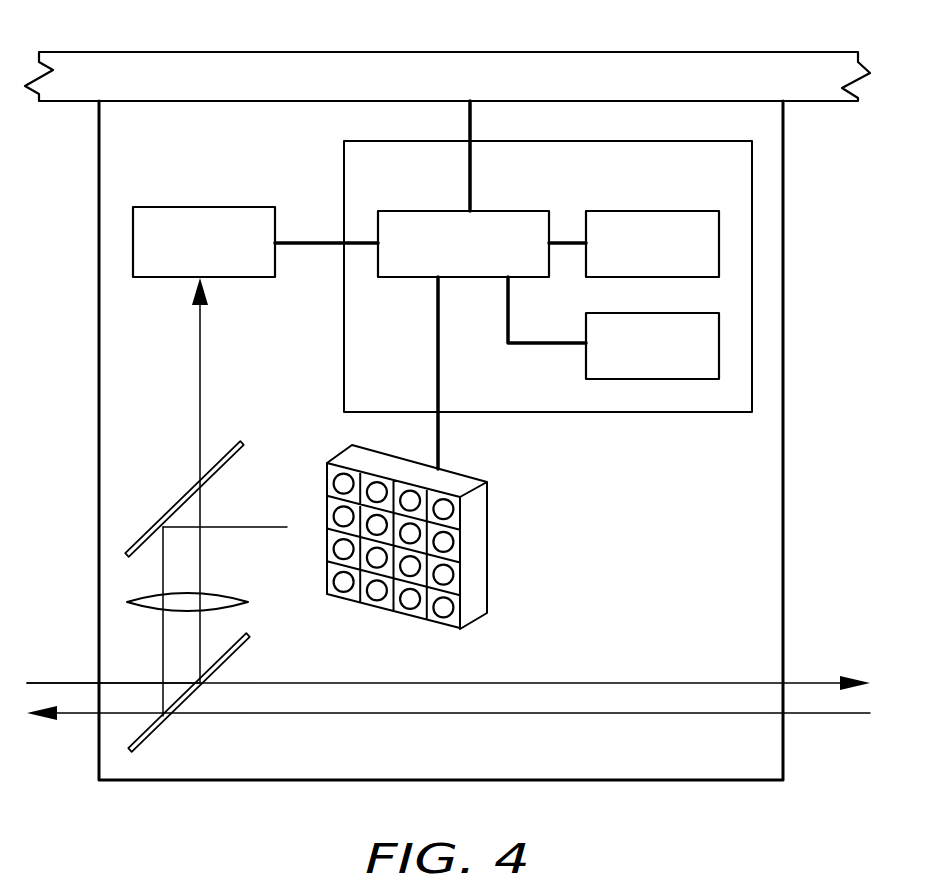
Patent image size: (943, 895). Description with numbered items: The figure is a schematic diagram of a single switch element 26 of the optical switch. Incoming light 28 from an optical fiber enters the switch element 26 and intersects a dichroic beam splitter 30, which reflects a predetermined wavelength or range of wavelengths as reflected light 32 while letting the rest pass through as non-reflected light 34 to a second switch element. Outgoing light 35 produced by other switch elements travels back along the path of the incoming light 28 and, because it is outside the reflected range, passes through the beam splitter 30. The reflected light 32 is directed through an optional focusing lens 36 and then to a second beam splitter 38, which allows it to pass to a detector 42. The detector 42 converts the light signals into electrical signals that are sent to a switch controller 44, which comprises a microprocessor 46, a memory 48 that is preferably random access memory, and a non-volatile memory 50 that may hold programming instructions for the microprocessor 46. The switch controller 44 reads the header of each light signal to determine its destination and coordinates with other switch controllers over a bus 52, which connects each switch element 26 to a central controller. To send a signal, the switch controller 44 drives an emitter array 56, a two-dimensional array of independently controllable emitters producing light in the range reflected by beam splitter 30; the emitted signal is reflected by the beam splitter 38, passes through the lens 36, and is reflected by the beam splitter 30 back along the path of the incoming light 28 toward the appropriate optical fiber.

The switch element 26 is at (681, 549).
The incoming light 28 is at (50, 681).
The beam splitter 30 is at (147, 742).
The reflected light 32 is at (205, 632).
The non-reflected light 34 is at (655, 682).
The outgoing light 35 is at (727, 715).
The focusing lens 36 is at (223, 592).
The beam splitter 38 is at (180, 497).
The detector 42 is at (197, 206).
The switch controller 44 is at (668, 414).
The microprocessor 46 is at (418, 279).
The memory 48 is at (592, 282).
The non-volatile memory 50 is at (671, 361).
The bus 52 is at (355, 52).
The emitter array 56 is at (488, 568).